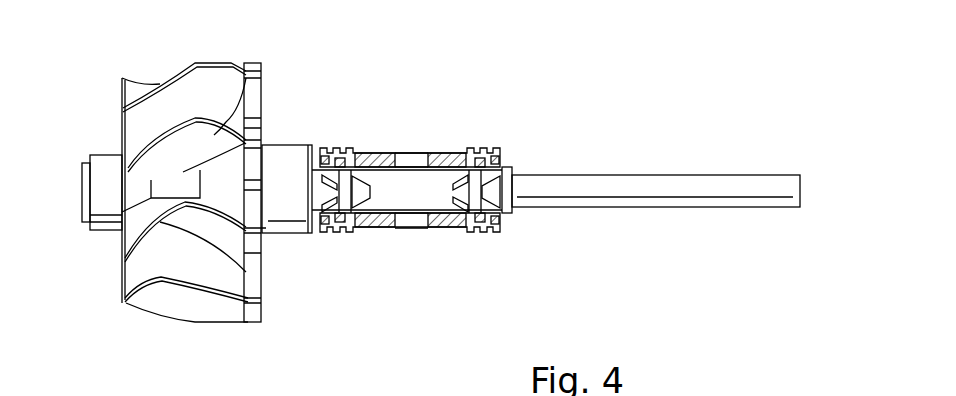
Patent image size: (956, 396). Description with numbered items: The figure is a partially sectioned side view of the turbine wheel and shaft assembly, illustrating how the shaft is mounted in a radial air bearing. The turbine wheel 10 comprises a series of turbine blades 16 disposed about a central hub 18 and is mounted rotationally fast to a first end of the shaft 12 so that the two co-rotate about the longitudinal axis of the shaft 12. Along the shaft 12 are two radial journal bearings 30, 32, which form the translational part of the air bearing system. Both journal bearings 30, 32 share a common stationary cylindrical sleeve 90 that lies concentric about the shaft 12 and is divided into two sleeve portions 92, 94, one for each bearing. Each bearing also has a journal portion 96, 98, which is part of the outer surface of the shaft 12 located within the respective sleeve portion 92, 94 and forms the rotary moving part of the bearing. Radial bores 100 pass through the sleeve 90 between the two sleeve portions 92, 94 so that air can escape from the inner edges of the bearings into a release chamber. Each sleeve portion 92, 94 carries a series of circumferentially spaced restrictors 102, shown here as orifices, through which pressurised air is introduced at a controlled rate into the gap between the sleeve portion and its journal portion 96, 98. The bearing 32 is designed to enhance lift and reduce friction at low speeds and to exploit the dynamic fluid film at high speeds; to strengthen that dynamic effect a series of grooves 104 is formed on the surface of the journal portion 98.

The turbine wheel 10 is at (142, 82).
The shaft 12 is at (740, 175).
The turbine blades 16 is at (207, 82).
The central hub 18 is at (105, 213).
The journal bearing 30 is at (335, 147).
The journal bearing 32 is at (490, 145).
The stationary cylindrical sleeve 90 is at (500, 226).
The sleeve portion 92 is at (368, 233).
The sleeve portion 94 is at (455, 233).
The journal portion 96 is at (378, 183).
The journal portion 98 is at (440, 233).
The radial bores 100 is at (418, 156).
The restrictors 102 is at (500, 160).
The grooves 104 is at (347, 150).